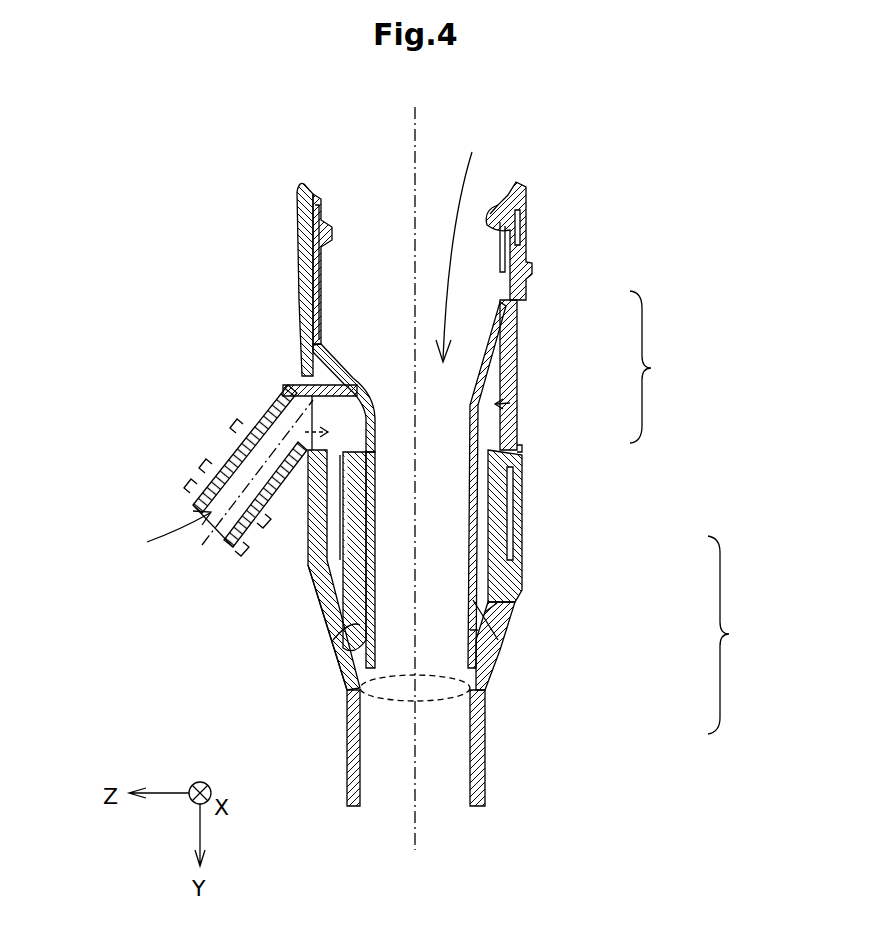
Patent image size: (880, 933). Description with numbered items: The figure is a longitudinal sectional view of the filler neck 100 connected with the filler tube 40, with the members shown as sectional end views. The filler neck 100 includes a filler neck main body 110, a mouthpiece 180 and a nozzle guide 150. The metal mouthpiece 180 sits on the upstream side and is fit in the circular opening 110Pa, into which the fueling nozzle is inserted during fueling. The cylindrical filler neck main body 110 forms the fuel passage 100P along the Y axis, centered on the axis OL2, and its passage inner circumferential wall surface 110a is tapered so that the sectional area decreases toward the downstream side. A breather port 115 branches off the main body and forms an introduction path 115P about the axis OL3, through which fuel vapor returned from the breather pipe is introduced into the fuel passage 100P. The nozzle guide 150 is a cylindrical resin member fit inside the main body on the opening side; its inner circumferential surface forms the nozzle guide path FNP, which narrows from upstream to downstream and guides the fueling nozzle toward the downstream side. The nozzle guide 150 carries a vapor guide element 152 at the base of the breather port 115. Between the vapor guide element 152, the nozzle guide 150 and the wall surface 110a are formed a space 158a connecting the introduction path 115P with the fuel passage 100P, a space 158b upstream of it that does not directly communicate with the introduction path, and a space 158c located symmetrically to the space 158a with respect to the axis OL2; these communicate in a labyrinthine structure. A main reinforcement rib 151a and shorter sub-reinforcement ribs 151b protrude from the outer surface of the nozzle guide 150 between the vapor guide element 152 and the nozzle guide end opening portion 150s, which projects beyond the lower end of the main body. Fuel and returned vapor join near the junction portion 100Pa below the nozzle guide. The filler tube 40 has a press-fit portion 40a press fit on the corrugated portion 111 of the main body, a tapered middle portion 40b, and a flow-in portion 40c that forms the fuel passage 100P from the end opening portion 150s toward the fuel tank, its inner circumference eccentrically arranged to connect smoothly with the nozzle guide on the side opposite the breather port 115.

The axis OL2 is at (415, 465).
The axis OL3 is at (245, 494).
The nozzle guide path FNP is at (476, 246).
The space 158b is at (293, 372).
The vapor guide element 152 is at (298, 372).
The fuel passage 100P is at (438, 402).
The space 158a is at (305, 432).
The breather port 115 is at (222, 458).
The introduction path 115P is at (147, 535).
The passage inner circumferential wall surface 110a is at (318, 560).
The main reinforcement rib 151a is at (355, 622).
The nozzle guide end opening portion 150s is at (358, 657).
The junction portion 100Pa is at (372, 678).
The mouthpiece 180 is at (527, 277).
The opening 110Pa is at (495, 218).
The filler neck main body 110 is at (517, 364).
The nozzle guide 150 is at (478, 422).
The space 158c is at (510, 403).
The press-fit portion 40a is at (527, 518).
The corrugated portion 111 is at (520, 565).
The middle portion 40b is at (503, 630).
The sub-reinforcement ribs 151b is at (490, 640).
The flow-in portion 40c is at (487, 773).
The filler neck 100 is at (668, 367).
The filler tube 40 is at (737, 635).